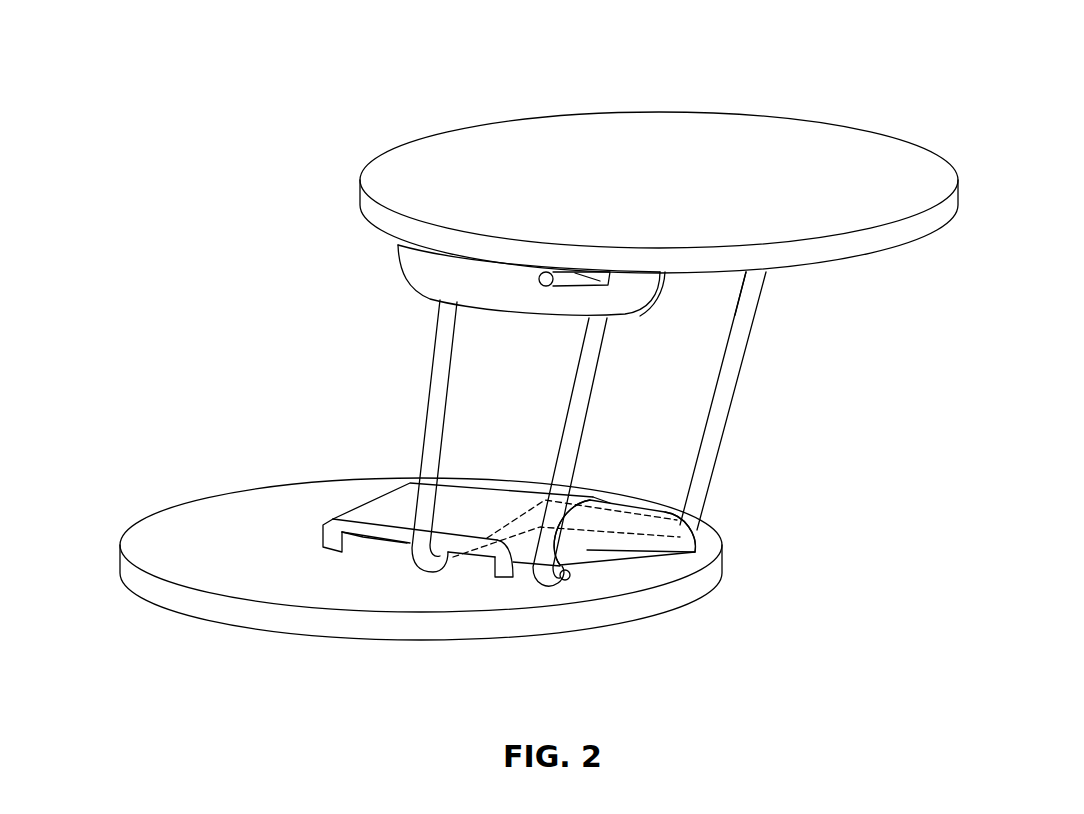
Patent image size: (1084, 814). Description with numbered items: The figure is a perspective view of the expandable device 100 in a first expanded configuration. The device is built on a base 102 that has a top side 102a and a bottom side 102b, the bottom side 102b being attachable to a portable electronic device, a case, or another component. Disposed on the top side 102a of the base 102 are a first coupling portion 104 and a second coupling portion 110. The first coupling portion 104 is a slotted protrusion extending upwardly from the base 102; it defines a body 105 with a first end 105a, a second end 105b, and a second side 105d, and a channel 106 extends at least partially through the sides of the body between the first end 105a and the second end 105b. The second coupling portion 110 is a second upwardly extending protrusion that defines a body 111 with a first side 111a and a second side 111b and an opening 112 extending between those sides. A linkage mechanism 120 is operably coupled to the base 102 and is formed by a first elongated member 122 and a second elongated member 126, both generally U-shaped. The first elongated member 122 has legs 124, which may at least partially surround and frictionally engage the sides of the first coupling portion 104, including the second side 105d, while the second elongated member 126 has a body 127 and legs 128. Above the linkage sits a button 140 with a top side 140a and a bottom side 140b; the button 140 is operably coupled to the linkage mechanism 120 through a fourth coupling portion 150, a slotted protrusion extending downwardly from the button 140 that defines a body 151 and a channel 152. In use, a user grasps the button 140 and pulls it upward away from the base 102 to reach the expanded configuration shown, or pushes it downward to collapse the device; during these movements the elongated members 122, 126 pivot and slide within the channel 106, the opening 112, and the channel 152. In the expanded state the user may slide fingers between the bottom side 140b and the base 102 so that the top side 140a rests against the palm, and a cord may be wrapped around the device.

The expandable device 100 is at (162, 54).
The base 102 is at (382, 548).
The top side of base 102a is at (199, 526).
The bottom side of base 102b is at (152, 612).
The first coupling portion 104 is at (514, 553).
The body of slotted protrusion 105 is at (438, 558).
The first end of body 105a is at (639, 500).
The second end of body 105b is at (384, 491).
The second side of body 105d is at (483, 570).
The channel 106 is at (377, 552).
The second coupling portion 110 is at (610, 595).
The body of second protrusion 111 is at (610, 595).
The first side of body 111a is at (703, 538).
The second side of body 111b is at (571, 577).
The opening 112 is at (587, 572).
The linkage mechanism 120 is at (597, 429).
The first elongated member 122 is at (432, 405).
The legs of first elongated member 124 is at (442, 355).
The second elongated member 126 is at (730, 377).
The body of second elongated member 127 is at (563, 590).
The legs of second elongated member 128 is at (757, 292).
The button 140 is at (659, 192).
The top side of button 140a is at (752, 126).
The bottom side of button 140b is at (891, 258).
The fourth coupling portion 150 is at (502, 278).
The body of fourth slotted protrusion 151 is at (403, 248).
The channel of fourth slotted protrusion 152 is at (600, 282).